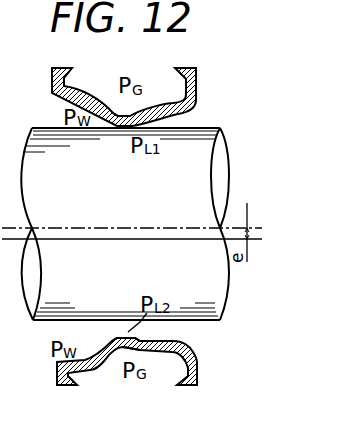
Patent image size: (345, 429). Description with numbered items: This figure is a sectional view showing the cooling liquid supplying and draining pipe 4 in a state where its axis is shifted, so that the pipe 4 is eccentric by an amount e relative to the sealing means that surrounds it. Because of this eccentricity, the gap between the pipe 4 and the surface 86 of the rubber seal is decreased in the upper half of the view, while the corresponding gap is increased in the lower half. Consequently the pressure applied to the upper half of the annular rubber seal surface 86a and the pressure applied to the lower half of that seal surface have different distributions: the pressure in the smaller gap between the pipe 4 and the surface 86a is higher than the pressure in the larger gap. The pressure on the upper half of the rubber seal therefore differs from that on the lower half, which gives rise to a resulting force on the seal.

The cooling liquid supplying and draining pipe 4 is at (226, 138).
The surface of the rubber seal 86 is at (197, 78).
The annular rubber seal surface 86a is at (115, 127).